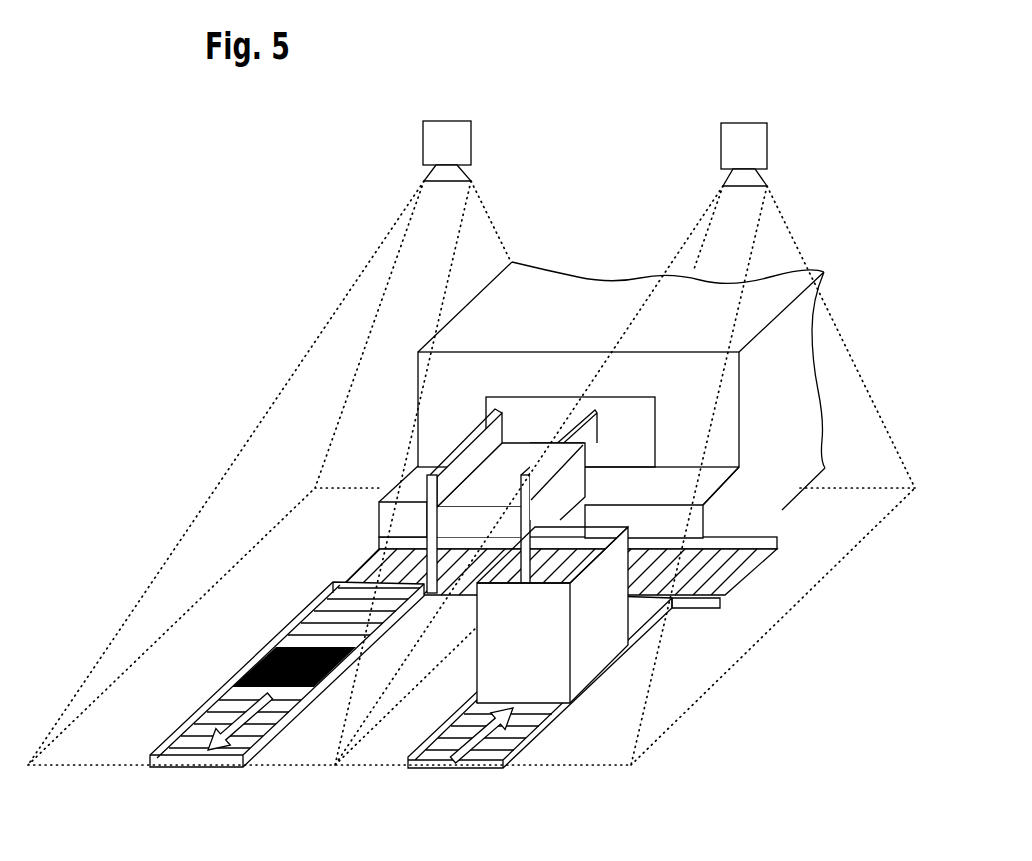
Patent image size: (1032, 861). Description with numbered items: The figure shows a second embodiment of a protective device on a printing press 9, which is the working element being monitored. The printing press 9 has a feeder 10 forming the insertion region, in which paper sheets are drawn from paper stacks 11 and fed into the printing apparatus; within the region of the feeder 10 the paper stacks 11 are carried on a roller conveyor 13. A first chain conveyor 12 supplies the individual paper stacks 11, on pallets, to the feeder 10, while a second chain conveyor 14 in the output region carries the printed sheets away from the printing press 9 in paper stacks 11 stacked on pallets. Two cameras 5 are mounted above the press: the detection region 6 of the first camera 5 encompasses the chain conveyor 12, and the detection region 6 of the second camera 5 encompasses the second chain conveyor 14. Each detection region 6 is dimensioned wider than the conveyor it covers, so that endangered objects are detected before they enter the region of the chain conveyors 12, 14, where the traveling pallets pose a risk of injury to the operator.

The camera 5 is at (457, 145).
The detection region 6 is at (345, 302).
The printing press 9 is at (854, 445).
The feeder 10 is at (465, 437).
The paper stack 11 is at (583, 468).
The chain conveyor 12 is at (443, 757).
The roller conveyor 13 is at (368, 570).
The second chain conveyor 14 is at (193, 750).